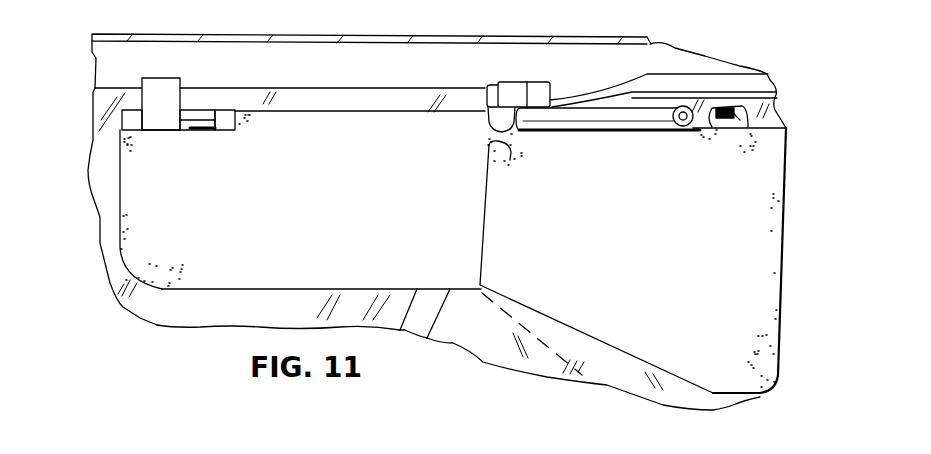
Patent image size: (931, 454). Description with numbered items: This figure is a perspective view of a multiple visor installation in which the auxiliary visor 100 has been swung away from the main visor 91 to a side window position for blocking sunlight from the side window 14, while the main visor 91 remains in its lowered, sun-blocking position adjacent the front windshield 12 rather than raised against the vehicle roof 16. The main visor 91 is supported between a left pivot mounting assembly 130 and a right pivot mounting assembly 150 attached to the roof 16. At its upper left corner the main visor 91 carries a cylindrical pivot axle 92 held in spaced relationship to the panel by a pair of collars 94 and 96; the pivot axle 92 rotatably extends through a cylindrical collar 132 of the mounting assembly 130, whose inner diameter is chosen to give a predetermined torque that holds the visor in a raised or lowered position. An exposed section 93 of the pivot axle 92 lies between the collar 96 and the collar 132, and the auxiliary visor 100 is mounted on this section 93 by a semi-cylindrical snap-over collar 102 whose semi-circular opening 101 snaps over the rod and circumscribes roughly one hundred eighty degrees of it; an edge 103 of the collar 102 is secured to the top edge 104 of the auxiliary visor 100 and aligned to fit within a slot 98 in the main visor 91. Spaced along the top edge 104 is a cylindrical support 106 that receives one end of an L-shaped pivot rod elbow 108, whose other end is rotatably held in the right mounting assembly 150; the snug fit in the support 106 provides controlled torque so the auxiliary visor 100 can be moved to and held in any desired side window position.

The front windshield 12 is at (242, 319).
The side window 14 is at (548, 356).
The vehicle roof 16 is at (407, 53).
The main visor 91 is at (117, 200).
The pivot axle 92 is at (209, 128).
The section of pivot rod 93 is at (197, 111).
The collar 94 is at (134, 132).
The collar 96 is at (236, 129).
The slot 98 is at (193, 134).
The auxiliary visor 100 is at (790, 251).
The semi-circular opening 101 is at (697, 129).
The snap-over collar 102 is at (749, 130).
The edge of mounting socket 103 is at (734, 131).
The top edge of visor 104 is at (784, 127).
The cylindrical support 106 is at (624, 131).
The pivot rod elbow 108 is at (497, 129).
The left pivot mounting assembly 130 is at (192, 91).
The cylindrical collar 132 is at (160, 126).
The right pivot mounting assembly 150 is at (545, 72).